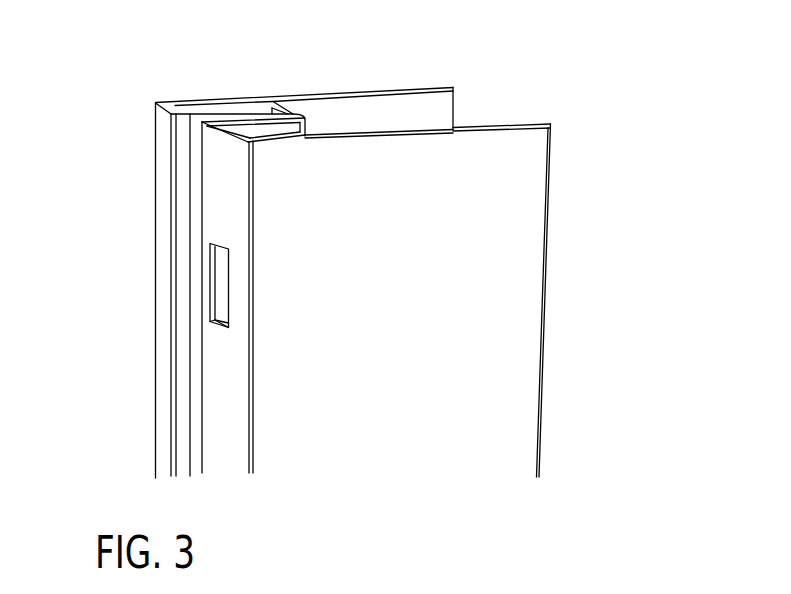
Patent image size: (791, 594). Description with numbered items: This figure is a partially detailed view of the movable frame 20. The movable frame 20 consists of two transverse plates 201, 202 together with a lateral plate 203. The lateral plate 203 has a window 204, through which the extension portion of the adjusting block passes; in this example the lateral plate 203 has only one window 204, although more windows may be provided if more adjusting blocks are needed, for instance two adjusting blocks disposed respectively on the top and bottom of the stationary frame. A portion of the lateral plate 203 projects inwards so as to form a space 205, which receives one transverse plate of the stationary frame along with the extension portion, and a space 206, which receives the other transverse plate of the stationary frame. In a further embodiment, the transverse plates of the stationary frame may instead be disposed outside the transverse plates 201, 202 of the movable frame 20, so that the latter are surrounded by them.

The movable frame 20 is at (392, 533).
The transverse plate 201 is at (514, 315).
The transverse plate 202 is at (352, 92).
The lateral plate 203 is at (158, 177).
The window 204 is at (222, 292).
The space 205 is at (285, 131).
The space 206 is at (207, 105).